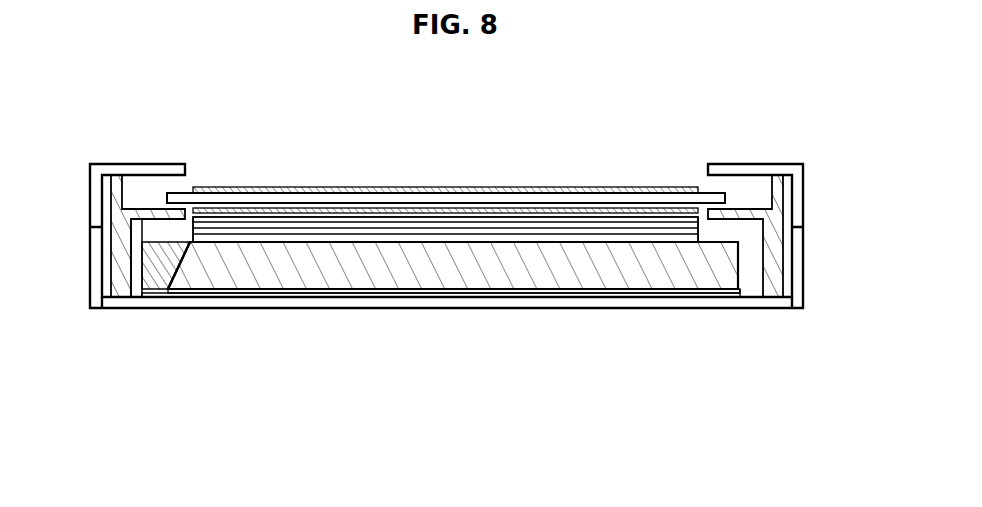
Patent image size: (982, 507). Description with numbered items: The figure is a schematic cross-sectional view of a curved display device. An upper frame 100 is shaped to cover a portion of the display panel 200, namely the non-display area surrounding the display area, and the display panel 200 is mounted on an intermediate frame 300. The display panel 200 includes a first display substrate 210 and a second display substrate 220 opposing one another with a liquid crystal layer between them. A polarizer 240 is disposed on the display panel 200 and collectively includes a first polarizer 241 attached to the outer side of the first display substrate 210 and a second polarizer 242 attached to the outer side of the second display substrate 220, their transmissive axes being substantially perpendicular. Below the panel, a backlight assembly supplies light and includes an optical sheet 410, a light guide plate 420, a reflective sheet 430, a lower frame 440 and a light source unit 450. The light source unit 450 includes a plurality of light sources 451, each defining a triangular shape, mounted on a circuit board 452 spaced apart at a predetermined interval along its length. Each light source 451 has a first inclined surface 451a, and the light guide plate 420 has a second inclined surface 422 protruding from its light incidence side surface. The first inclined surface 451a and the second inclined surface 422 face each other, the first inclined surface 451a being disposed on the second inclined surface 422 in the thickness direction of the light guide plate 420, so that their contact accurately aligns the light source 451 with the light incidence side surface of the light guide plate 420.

The upper frame 100 is at (755, 168).
The display panel 200 is at (445, 161).
The first display substrate 210 is at (488, 123).
The second display substrate 220 is at (485, 198).
The polarizer 240 is at (446, 146).
The first polarizer 241 is at (308, 123).
The second polarizer 242 is at (308, 190).
The intermediate frame 300 is at (772, 260).
The optical sheet 410 is at (598, 222).
The light guide plate 420 is at (387, 303).
The second inclined surface 422 is at (152, 252).
The reflective sheet 430 is at (424, 290).
The lower frame 440 is at (361, 294).
The light source unit 450 is at (158, 315).
The light source 451 is at (150, 276).
The first inclined surface 451a is at (152, 252).
The circuit board 452 is at (138, 292).